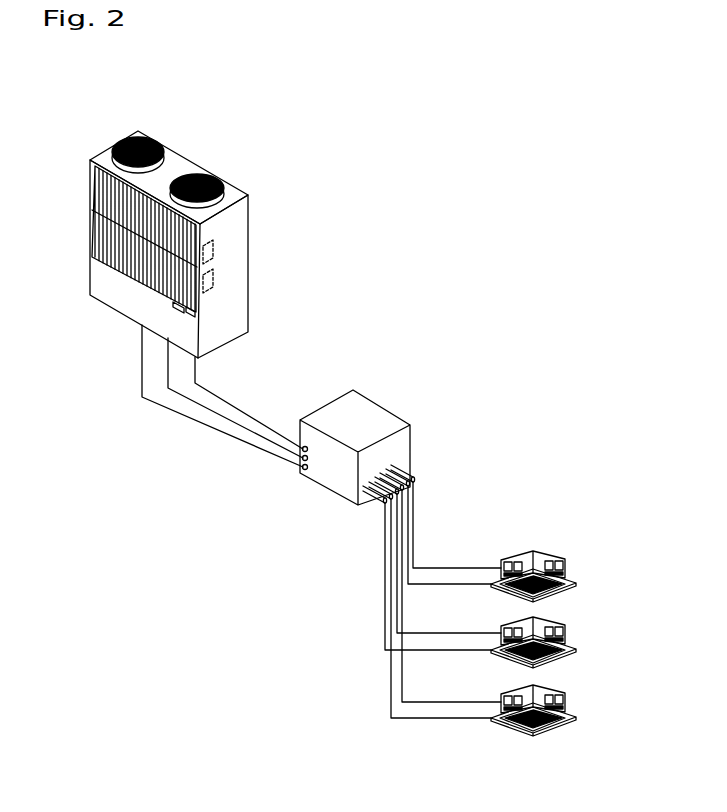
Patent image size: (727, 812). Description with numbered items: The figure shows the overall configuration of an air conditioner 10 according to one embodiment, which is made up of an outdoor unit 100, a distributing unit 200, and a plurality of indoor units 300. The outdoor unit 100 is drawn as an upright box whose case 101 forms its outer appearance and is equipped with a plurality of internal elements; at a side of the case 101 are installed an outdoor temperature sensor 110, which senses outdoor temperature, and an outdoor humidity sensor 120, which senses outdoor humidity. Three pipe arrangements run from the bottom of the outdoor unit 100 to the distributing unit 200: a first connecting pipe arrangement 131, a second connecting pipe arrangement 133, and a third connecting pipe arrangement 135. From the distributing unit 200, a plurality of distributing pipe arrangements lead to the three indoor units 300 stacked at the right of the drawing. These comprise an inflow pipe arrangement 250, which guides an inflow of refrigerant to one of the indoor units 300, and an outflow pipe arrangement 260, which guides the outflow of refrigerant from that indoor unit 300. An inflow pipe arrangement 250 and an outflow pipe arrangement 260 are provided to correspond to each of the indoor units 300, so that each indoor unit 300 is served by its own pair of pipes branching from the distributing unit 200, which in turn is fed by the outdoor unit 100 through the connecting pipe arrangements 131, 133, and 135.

The air conditioner 10 is at (362, 169).
The outdoor unit 100 is at (204, 149).
The case 101 is at (245, 204).
The outdoor temperature sensor 110 is at (213, 250).
The outdoor humidity sensor 120 is at (213, 280).
The first connecting pipe arrangement 131 is at (195, 371).
The second connecting pipe arrangement 133 is at (170, 393).
The third connecting pipe arrangement 135 is at (142, 388).
The distributing unit 200 is at (348, 390).
The inflow pipe arrangement 250 is at (458, 567).
The outflow pipe arrangement 260 is at (467, 584).
The indoor units 300 is at (534, 550).